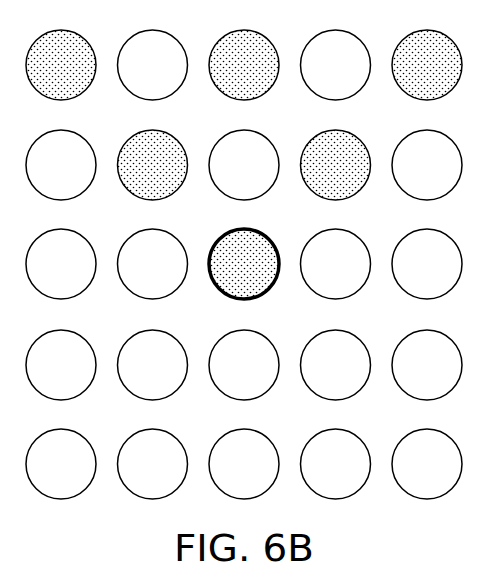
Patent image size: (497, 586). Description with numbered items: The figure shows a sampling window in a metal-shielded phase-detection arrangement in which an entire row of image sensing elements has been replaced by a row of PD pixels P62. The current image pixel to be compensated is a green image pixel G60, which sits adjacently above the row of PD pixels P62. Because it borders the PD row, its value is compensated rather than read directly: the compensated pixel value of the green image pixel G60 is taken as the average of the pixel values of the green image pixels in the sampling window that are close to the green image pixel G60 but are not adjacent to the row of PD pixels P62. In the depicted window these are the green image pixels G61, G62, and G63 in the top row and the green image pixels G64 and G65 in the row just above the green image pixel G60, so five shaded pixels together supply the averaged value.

The green image pixel G60 is at (244, 264).
The green image pixel G61 is at (61, 65).
The green image pixel G62 is at (244, 65).
The green image pixel G63 is at (427, 65).
The green image pixel G64 is at (153, 165).
The green image pixel G65 is at (336, 165).
The PD pixels P62 is at (244, 365).